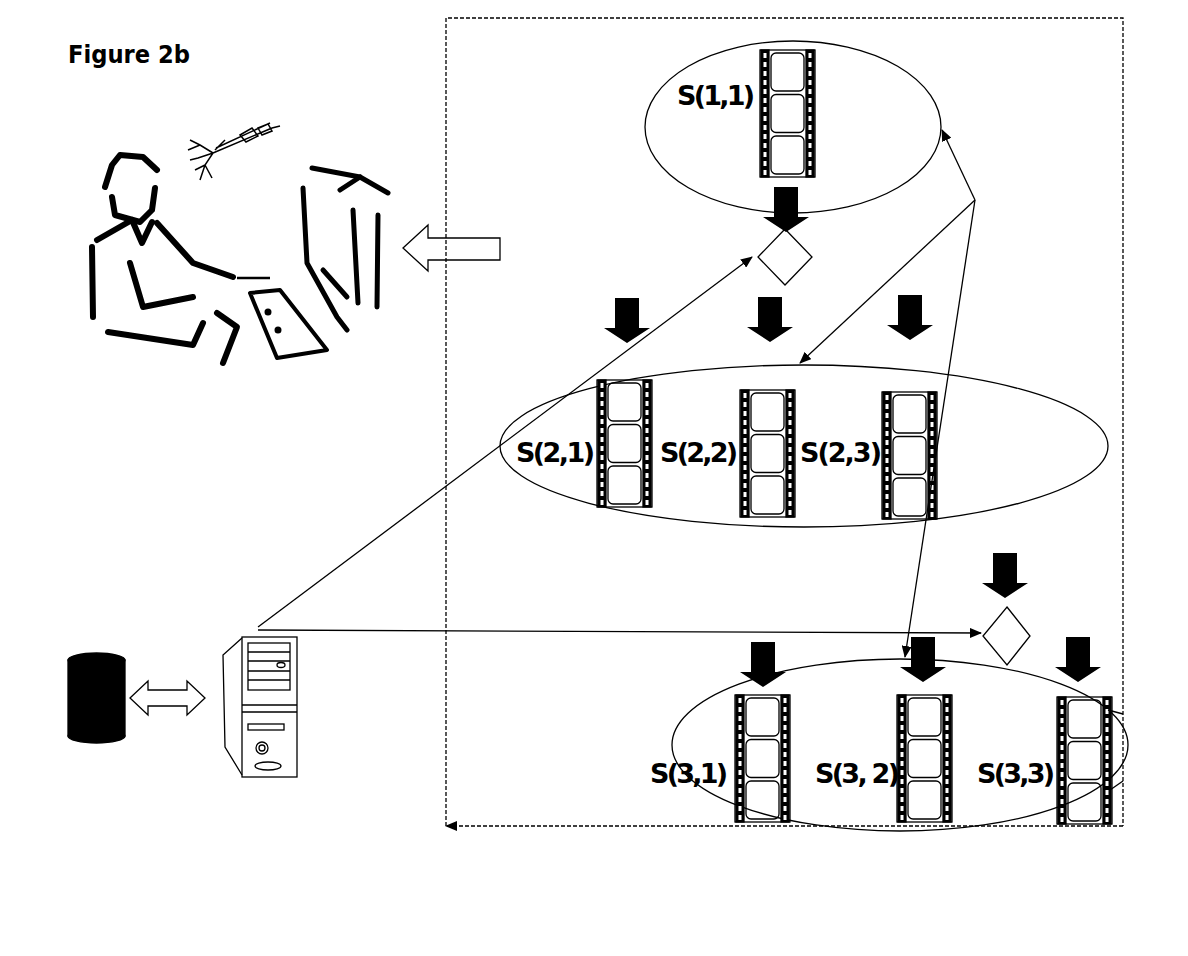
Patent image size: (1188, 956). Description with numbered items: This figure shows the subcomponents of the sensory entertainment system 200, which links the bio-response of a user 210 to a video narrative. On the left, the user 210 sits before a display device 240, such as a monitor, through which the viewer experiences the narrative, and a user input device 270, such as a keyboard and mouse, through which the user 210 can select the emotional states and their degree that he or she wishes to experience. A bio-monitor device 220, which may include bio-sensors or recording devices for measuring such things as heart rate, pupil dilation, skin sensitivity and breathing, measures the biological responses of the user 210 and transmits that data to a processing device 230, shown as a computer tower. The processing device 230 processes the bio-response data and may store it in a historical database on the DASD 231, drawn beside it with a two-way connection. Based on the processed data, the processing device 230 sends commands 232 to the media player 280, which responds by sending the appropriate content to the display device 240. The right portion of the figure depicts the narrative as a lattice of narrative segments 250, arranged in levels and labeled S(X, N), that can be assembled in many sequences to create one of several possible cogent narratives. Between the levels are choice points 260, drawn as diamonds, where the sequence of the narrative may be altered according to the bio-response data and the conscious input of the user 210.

The sensory entertainment system 200 is at (352, 73).
The user 210 is at (181, 275).
The bio-monitor device 220 is at (258, 622).
The processing device 230 is at (260, 727).
The DASD 231 is at (136, 731).
The commands 232 is at (619, 467).
The display device 240 is at (345, 249).
The narrative segments 250 is at (917, 393).
The choice points 260 is at (894, 447).
The user input device 270 is at (288, 335).
The media player 280 is at (784, 768).